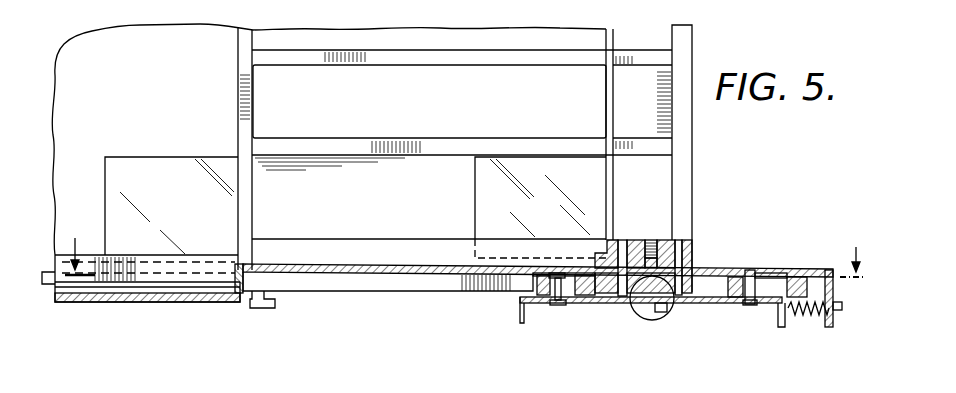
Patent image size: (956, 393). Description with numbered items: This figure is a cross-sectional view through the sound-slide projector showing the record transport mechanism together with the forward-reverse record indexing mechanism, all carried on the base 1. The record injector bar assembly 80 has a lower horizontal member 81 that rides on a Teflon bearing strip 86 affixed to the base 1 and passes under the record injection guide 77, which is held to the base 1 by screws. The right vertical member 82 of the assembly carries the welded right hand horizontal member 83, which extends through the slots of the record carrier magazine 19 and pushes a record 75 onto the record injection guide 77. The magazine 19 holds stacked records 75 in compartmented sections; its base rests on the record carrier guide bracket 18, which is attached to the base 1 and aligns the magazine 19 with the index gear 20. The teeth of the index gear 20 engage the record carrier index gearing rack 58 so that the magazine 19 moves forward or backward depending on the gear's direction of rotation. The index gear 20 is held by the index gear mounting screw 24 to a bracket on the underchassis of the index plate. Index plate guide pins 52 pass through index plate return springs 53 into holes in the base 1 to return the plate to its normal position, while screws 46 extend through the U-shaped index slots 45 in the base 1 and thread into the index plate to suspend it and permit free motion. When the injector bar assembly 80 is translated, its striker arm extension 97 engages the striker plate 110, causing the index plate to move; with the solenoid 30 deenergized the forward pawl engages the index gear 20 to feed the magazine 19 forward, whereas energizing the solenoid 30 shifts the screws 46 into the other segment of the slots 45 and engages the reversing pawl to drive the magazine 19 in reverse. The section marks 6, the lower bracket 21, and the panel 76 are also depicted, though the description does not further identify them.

The base 1 is at (225, 300).
The section line 6- 6 is at (465, 248).
The record carrier guide bracket 18 is at (372, 266).
The record carrier magazine 19 is at (614, 33).
The index gear 20 is at (688, 242).
The bracket 21 is at (545, 304).
The index gear mounting screw 24 is at (657, 245).
The solenoid 30 is at (632, 322).
The index slots 45 is at (577, 273).
The screws 46 is at (561, 304).
The index plate guide pins 52 is at (838, 324).
The index plate return springs 53 is at (800, 315).
The record carrier index gearing rack 58 is at (613, 250).
The record 75 is at (172, 113).
The panel 76 is at (113, 181).
The record injection guide 77 is at (137, 285).
The record injector bar assembly 80 is at (693, 38).
The lower horizontal member 81 is at (50, 288).
The right vertical member 82 is at (685, 188).
The right hand horizontal member 83 is at (446, 62).
The Teflon bearing strip 86 is at (95, 302).
The striker arm extension 97 is at (260, 308).
The striker plate 110 is at (662, 316).